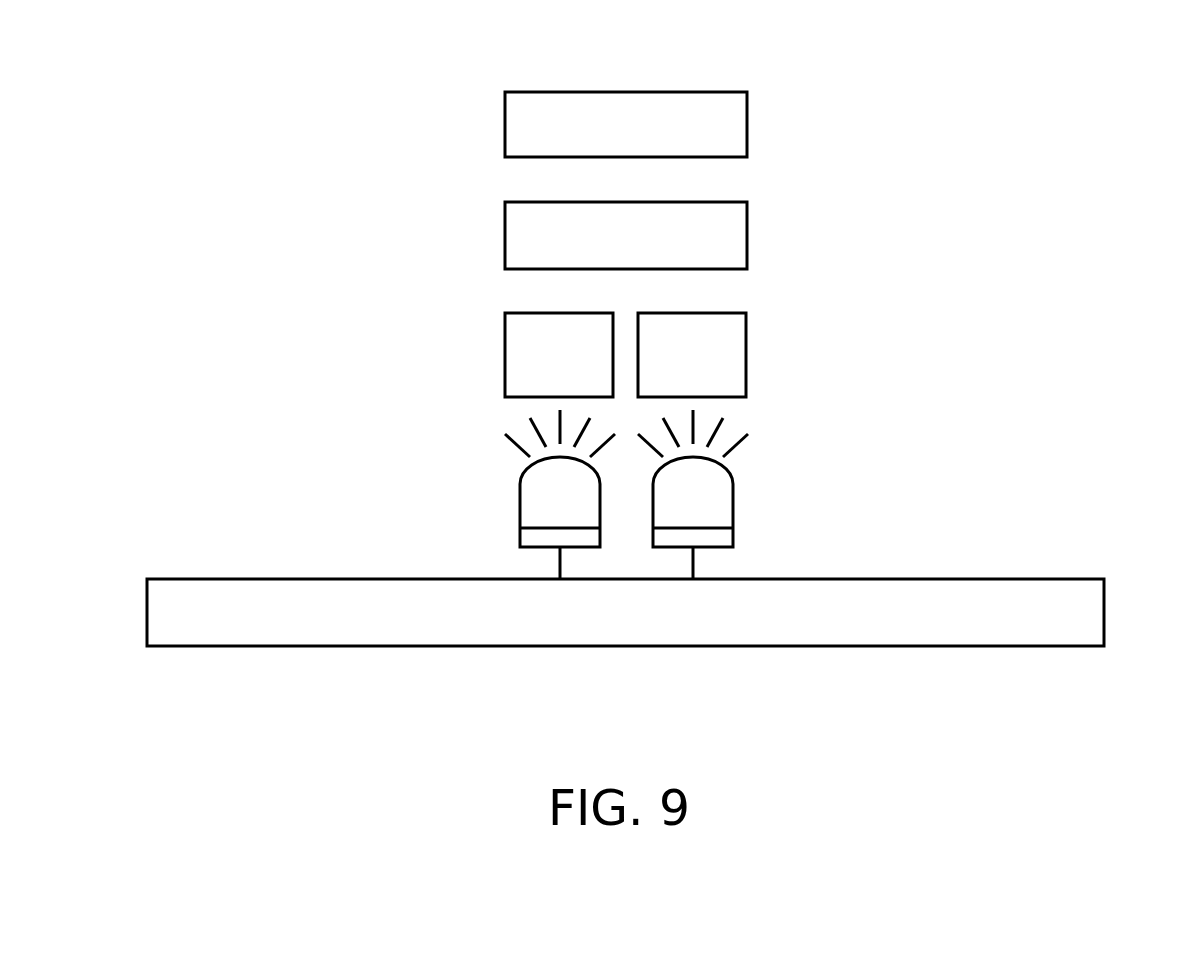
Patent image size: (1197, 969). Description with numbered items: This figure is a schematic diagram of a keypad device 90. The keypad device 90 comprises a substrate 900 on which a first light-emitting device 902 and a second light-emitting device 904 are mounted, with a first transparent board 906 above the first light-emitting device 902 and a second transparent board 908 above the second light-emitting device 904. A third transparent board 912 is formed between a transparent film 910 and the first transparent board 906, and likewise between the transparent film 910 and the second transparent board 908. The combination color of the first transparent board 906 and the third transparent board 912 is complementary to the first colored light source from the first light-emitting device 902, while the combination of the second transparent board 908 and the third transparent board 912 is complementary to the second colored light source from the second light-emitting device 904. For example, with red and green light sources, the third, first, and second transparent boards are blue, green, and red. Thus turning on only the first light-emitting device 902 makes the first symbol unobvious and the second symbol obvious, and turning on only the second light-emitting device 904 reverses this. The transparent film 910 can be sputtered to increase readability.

The keypad device 90 is at (1003, 186).
The substrate 900 is at (1067, 579).
The first light-emitting device 902 is at (537, 507).
The second light-emitting device 904 is at (713, 507).
The first transparent board 906 is at (522, 313).
The second transparent board 908 is at (730, 313).
The transparent film 910 is at (730, 92).
The third transparent board 912 is at (730, 202).